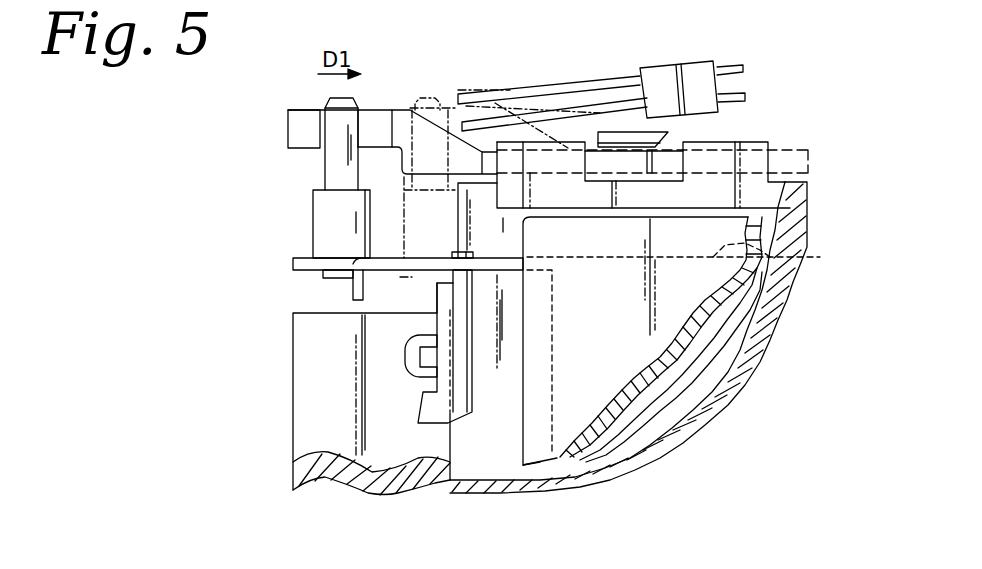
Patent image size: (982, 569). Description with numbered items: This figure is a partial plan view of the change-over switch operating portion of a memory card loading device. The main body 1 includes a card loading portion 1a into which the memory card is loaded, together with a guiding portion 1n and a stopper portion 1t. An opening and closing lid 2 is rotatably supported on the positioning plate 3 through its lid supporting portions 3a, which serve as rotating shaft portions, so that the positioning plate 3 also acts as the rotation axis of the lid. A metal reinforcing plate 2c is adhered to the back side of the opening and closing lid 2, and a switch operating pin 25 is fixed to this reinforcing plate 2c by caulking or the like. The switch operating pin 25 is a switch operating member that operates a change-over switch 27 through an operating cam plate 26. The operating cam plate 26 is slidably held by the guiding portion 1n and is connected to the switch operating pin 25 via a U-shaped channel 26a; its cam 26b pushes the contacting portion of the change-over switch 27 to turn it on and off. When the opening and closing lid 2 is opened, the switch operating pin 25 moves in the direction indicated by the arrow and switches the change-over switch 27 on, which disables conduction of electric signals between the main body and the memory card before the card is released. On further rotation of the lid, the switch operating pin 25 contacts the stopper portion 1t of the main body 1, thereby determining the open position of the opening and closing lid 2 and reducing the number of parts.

The main body 1 is at (293, 440).
The card loading portion 1a is at (500, 470).
The guiding portion 1n is at (668, 134).
The stopper portion 1t is at (460, 232).
The opening and closing lid 2 is at (660, 335).
The reinforcing plate 2c is at (387, 267).
The positioning plate 3 is at (420, 405).
The lid supporting portion 3a is at (455, 253).
The switch operating pin 25 is at (400, 189).
The operating cam plate 26 is at (289, 109).
The U-shaped channel 26a is at (288, 128).
The cam 26b is at (431, 113).
The change-over switch 27 is at (652, 68).